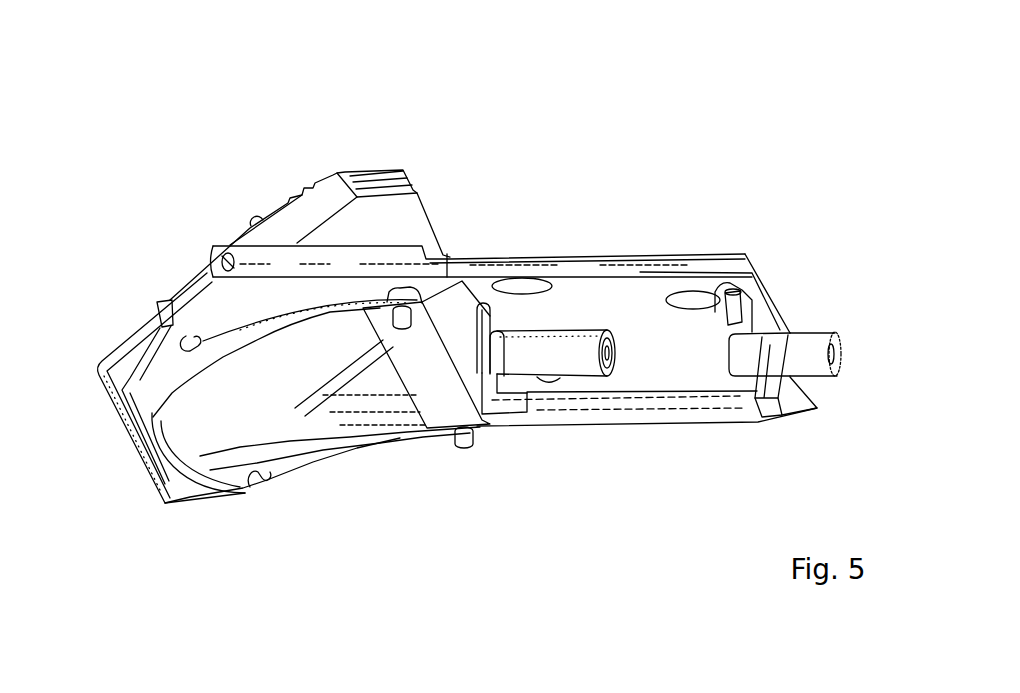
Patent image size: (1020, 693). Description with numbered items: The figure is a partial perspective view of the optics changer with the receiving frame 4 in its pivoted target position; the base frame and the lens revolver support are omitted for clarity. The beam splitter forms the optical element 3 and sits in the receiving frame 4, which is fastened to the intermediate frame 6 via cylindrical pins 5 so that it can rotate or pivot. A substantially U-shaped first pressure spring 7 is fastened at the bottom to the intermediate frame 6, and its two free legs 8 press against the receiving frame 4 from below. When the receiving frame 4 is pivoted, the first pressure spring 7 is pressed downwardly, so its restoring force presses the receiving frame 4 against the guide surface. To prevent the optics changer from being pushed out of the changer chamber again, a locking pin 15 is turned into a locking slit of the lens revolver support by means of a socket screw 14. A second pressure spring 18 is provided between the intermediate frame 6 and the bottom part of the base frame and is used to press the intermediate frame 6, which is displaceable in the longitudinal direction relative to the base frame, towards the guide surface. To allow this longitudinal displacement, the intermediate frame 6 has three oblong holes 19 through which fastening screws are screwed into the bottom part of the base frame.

The optical element 3 is at (252, 387).
The receiving frame 4 is at (158, 375).
The cylindrical pins 5 is at (228, 268).
The intermediate frame 6 is at (325, 247).
The first pressure spring 7 is at (412, 370).
The free legs 8 is at (268, 332).
The socket screw 14 is at (800, 372).
The locking pin 15 is at (762, 416).
The second pressure spring 18 is at (545, 337).
The oblong holes 19 is at (523, 282).